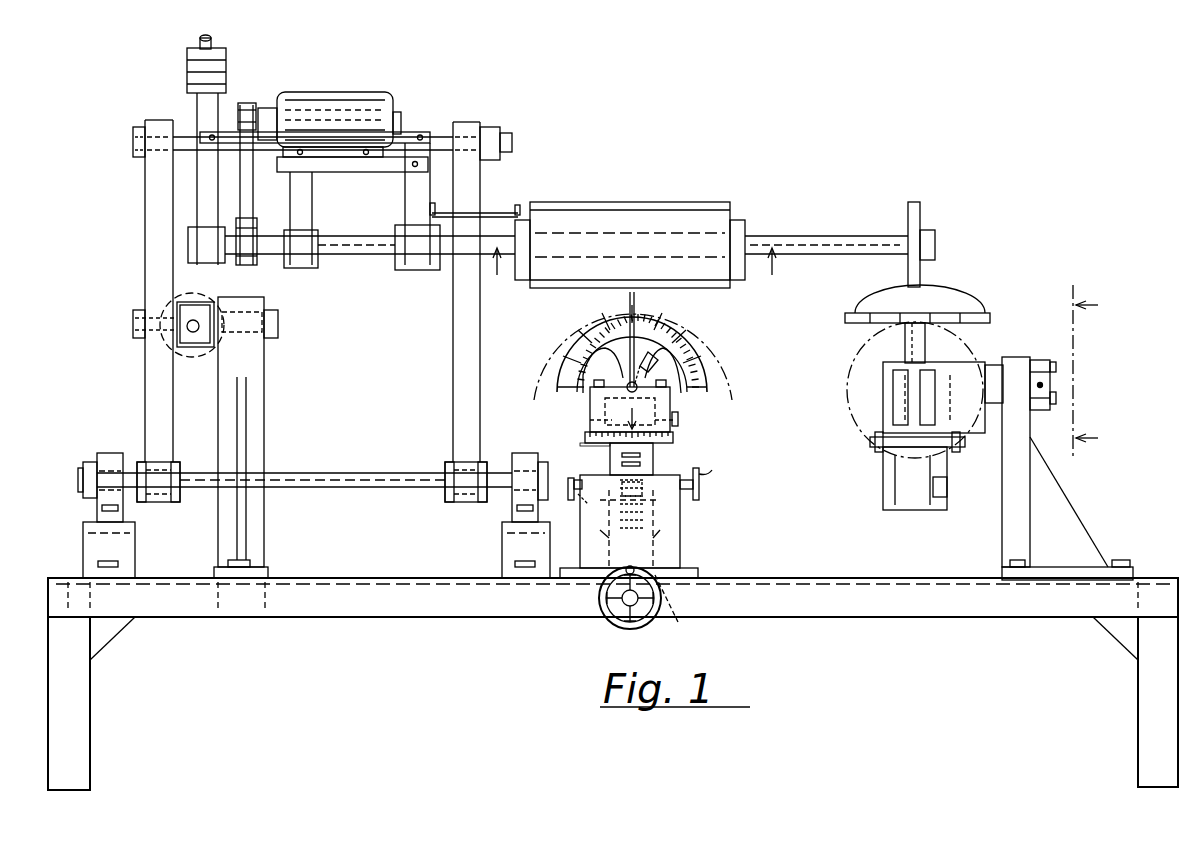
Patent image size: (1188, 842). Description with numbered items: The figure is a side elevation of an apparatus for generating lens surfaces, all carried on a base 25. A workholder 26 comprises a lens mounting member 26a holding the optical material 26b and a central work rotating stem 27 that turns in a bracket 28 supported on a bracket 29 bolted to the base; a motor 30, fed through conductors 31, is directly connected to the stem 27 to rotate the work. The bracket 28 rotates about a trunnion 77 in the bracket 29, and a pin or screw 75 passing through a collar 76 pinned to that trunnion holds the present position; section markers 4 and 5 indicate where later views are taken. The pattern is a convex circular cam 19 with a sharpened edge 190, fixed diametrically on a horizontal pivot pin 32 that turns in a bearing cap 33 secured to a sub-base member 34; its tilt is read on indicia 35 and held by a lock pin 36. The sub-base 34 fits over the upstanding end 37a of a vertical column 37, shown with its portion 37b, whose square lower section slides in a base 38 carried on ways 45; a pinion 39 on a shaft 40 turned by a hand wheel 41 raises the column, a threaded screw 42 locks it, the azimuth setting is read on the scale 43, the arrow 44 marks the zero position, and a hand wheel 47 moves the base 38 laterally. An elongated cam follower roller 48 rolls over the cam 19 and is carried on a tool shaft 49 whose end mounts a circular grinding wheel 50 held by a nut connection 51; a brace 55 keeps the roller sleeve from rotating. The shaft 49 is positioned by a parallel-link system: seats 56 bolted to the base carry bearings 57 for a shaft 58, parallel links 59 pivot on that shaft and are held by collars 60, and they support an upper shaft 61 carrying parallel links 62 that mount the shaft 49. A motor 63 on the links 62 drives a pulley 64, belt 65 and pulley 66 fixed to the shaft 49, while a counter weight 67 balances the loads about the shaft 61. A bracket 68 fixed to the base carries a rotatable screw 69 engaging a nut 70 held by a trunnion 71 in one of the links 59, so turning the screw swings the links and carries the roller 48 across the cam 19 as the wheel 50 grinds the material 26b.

The section line 4- 4 is at (1095, 372).
The section line 5- 5 is at (634, 275).
The convex cam 19 is at (612, 326).
The sharpened edge 190 is at (642, 295).
The base 25 is at (613, 684).
The workholder 26 is at (975, 290).
The lens mounting member 26a is at (990, 318).
The lens material 26b is at (932, 292).
The work rotating shaft 27 is at (925, 350).
The bracket 28 is at (985, 425).
The bracket 29 is at (1078, 518).
The motor 30 is at (883, 483).
The conductors 31 is at (947, 487).
The pivot pin 32 is at (600, 396).
The bearing cap 33 is at (610, 372).
The sub-base member 34 is at (680, 395).
The indicia 35 is at (560, 372).
The lock pin 36 is at (648, 352).
The vertical column 37 is at (655, 452).
The upstanding end 37a is at (595, 426).
The gib 37b is at (645, 463).
The base member 38 is at (680, 545).
The pinion 39 is at (645, 500).
The shaft 40 is at (700, 485).
The hand wheel 41 is at (714, 474).
The threaded screw 42 is at (585, 502).
The scale 43 is at (673, 438).
The arrow 44 is at (595, 443).
The ways 45 is at (680, 620).
The hand wheel 47 is at (610, 618).
The cam follower roller 48 is at (655, 202).
The shaft 49 is at (358, 254).
The grinding tool 50 is at (920, 208).
The nut connection 51 is at (935, 240).
The brace 55 is at (492, 213).
The seats 56 is at (135, 542).
The bearings 57 is at (112, 453).
The shaft 58 is at (345, 473).
The parallel links 59 is at (145, 232).
The collars 60 is at (155, 462).
The shaft 61 is at (470, 127).
The parallel links 62 is at (195, 183).
The motor 63 is at (352, 92).
The pulley 64 is at (250, 105).
The belt 65 is at (253, 180).
The pulley 66 is at (257, 228).
The counter weight 67 is at (187, 72).
The bracket 68 is at (265, 382).
The screw 69 is at (197, 343).
The nut 70 is at (205, 302).
The trunnion 71 is at (143, 338).
The pin or screw 75 is at (1056, 366).
The collar 76 is at (1056, 400).
The trunnion 77 is at (1050, 383).